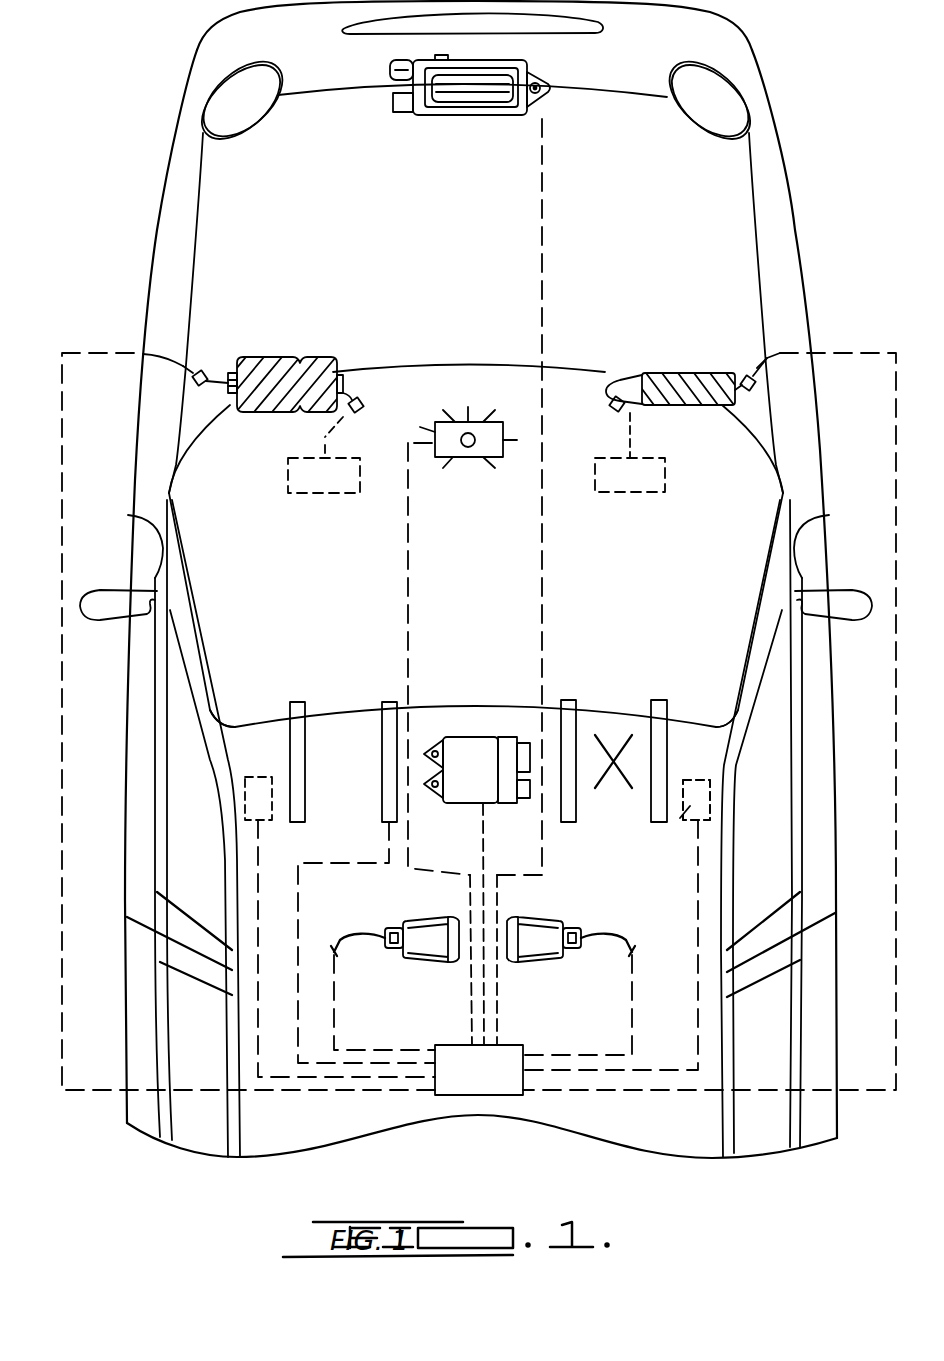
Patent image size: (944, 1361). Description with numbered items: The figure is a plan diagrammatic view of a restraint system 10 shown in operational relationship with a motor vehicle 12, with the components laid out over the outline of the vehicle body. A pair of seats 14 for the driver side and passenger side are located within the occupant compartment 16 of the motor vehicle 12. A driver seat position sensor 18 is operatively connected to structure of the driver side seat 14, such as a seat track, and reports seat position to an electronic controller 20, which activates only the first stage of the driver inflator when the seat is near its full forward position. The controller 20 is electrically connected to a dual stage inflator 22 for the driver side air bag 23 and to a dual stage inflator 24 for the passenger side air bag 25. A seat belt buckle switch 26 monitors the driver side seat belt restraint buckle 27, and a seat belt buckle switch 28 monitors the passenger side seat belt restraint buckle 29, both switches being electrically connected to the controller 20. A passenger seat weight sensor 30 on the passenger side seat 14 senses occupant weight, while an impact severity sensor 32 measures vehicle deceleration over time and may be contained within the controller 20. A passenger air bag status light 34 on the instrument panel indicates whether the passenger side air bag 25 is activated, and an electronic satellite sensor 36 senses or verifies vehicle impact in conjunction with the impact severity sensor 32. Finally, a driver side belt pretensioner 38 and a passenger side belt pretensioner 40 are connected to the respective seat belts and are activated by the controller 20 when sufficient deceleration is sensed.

The restraint system 10 is at (145, 135).
The motor vehicle 12 is at (770, 78).
The seats 14 is at (292, 712).
The occupant compartment 16 is at (715, 763).
The driver seat position sensor 18 is at (389, 708).
The electronic controller 20 is at (463, 1087).
The inflator 22 is at (278, 357).
The driver side air bag 23 is at (298, 492).
The inflator 24 is at (665, 370).
The passenger side air bag 25 is at (652, 493).
The seat belt buckle switch 26 is at (405, 930).
The driver side seat belt restraint buckle 27 is at (427, 945).
The seat belt buckle switch 28 is at (566, 918).
The passenger side seat belt restraint buckle 29 is at (528, 945).
The passenger seat weight sensor 30 is at (620, 742).
The impact severity sensor 32 is at (467, 747).
The passenger air bag status light 34 is at (463, 457).
The electronic satellite sensor 36 is at (455, 90).
The driver side belt pretensioner 38 is at (257, 777).
The passenger side belt pretensioner 40 is at (677, 822).